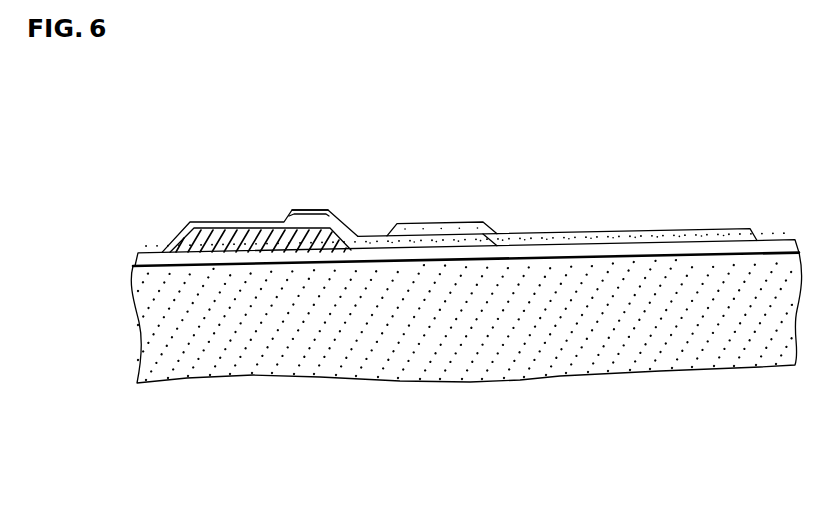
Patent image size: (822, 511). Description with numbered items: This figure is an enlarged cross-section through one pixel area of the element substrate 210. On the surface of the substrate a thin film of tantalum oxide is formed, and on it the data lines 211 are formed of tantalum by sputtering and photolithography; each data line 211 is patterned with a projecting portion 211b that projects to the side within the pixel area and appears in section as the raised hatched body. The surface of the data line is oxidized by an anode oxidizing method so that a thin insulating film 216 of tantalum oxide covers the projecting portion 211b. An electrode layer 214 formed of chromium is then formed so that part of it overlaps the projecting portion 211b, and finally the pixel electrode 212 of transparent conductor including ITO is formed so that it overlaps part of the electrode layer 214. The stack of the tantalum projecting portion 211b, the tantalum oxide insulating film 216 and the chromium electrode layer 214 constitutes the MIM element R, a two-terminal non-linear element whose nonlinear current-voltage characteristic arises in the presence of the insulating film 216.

The element substrate 210 is at (348, 378).
The data line 211 is at (163, 251).
The projecting portion 211b is at (302, 248).
The pixel electrode 212 is at (598, 230).
The electrode layer 214 is at (366, 237).
The insulating film 216 is at (236, 222).
The MIM element R is at (299, 207).